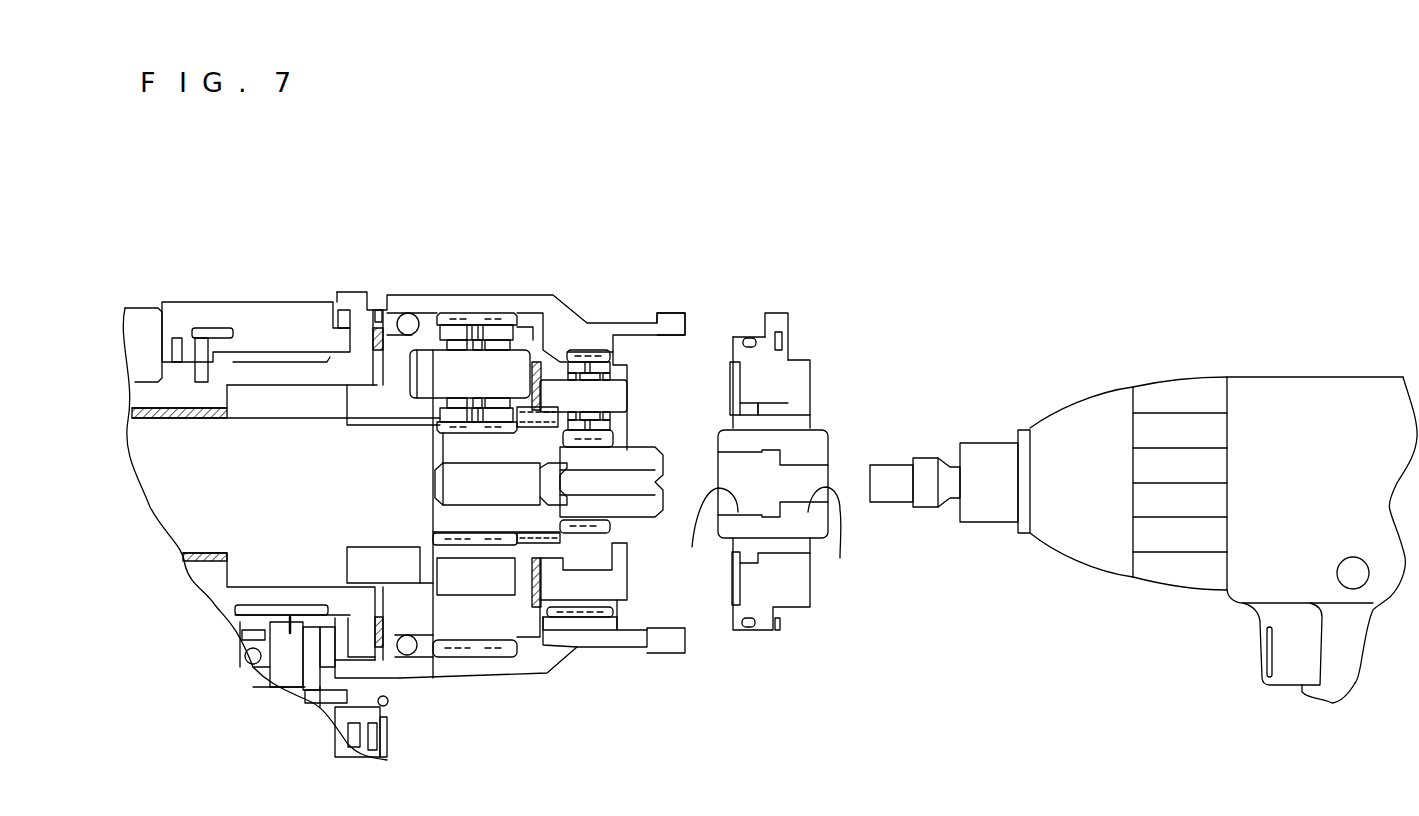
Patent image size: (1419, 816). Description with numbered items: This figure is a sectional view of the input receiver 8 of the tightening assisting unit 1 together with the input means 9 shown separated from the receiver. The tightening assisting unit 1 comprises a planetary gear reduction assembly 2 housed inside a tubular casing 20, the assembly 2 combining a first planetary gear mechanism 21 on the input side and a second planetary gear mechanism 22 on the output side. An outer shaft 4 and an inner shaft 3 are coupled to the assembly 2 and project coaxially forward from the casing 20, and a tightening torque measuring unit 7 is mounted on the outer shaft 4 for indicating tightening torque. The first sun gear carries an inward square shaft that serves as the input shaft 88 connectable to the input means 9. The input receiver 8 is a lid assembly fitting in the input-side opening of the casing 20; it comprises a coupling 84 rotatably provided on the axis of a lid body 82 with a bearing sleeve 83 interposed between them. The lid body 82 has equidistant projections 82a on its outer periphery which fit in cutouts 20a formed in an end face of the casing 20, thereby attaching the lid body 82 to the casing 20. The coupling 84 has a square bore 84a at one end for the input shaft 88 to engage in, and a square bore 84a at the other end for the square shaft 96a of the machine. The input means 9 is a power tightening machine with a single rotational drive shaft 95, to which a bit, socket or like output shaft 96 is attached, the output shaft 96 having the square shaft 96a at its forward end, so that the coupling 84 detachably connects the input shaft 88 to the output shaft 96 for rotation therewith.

The tightening assisting unit 1 is at (592, 718).
The planetary gear reduction assembly 2 is at (590, 203).
The inner shaft 3 is at (193, 503).
The outer shaft 4 is at (230, 375).
The tightening torque measuring unit 7 is at (403, 733).
The input receiver 8 is at (795, 295).
The input means 9 is at (1112, 602).
The tubular casing 20 is at (408, 298).
The cutouts 20a is at (673, 312).
The first planetary gear mechanism 21 is at (585, 346).
The second planetary gear mechanism 22 is at (496, 311).
The lid body 82 is at (798, 372).
The projections 82a is at (780, 320).
The bearing sleeve 83 is at (788, 415).
The coupling 84 is at (820, 450).
The square bore 84a is at (773, 541).
The input shaft 88 is at (633, 505).
The rotational drive shaft 95 is at (980, 527).
The output shaft 96 is at (928, 498).
The square shaft 96a is at (892, 492).